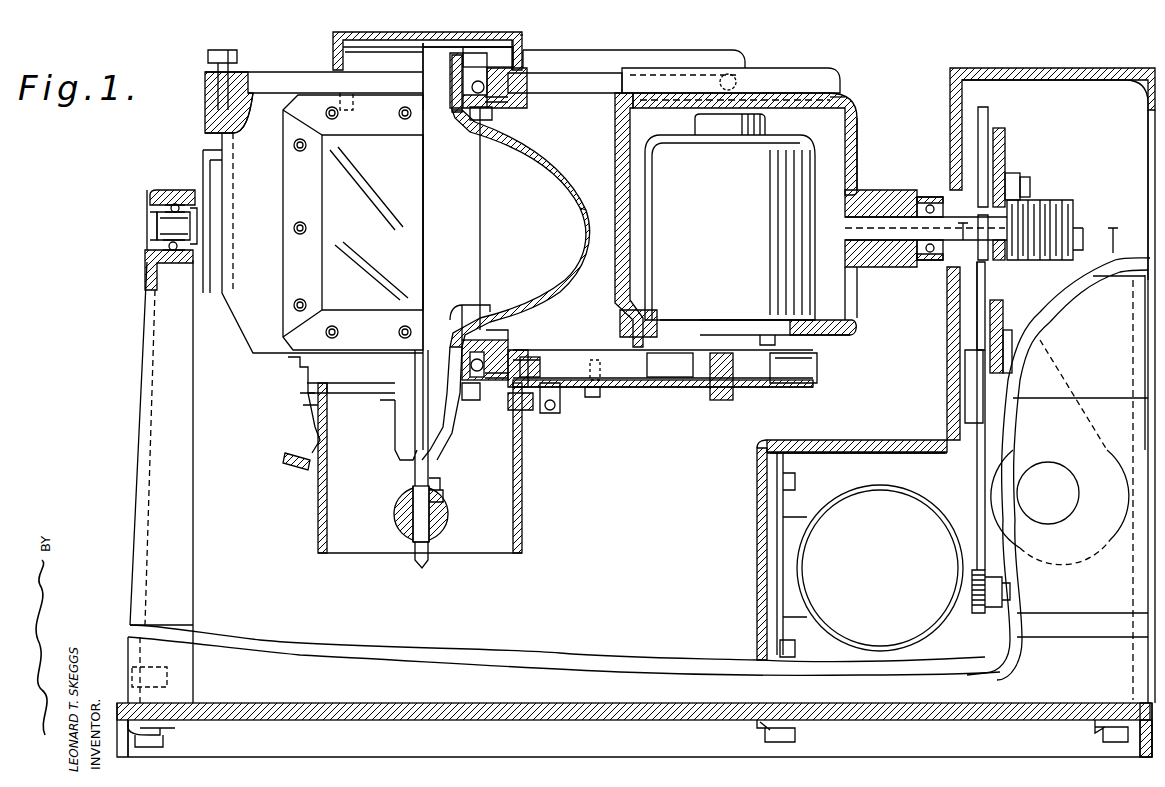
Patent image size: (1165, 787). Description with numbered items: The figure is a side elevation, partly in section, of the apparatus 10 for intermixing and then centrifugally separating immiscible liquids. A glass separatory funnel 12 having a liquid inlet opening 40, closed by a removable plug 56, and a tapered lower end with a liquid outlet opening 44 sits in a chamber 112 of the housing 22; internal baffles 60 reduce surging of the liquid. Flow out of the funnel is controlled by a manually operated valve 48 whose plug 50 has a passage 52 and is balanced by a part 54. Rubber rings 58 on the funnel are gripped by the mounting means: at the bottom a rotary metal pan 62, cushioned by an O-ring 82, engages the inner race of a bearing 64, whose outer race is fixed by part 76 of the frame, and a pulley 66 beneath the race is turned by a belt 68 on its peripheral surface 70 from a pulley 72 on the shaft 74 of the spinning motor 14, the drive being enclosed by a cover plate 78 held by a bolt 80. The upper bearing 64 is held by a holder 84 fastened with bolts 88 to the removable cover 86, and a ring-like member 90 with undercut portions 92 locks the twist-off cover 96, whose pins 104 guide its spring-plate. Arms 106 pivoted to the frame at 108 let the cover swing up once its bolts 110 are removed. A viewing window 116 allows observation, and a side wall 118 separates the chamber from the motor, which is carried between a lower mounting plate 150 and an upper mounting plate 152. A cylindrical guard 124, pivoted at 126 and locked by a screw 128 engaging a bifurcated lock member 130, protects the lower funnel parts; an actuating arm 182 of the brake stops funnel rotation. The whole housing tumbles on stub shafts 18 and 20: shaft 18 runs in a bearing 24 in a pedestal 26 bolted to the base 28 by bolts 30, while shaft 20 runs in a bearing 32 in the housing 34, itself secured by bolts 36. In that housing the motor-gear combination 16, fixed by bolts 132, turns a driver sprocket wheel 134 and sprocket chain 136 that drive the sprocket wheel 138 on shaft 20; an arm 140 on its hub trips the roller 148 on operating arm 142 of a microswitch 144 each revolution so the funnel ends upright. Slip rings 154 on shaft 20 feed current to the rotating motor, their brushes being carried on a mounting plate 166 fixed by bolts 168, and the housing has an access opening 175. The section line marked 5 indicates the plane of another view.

The apparatus 10 is at (96, 222).
The separatory funnel 12 is at (564, 143).
The motor 14 is at (738, 238).
The motor-gear combination 16 is at (913, 500).
The stub shaft 18 is at (157, 220).
The stub shaft 20 is at (880, 200).
The housing 22 is at (858, 125).
The bearing 24 is at (150, 245).
The pedestal 26 is at (133, 410).
The base 28 is at (345, 692).
The bolts 30 is at (165, 738).
The bearing 32 is at (928, 198).
The housing 34 is at (1060, 68).
The bolts 36 is at (796, 738).
The liquid inlet opening 40 is at (437, 75).
The liquid outlet opening 44 is at (430, 462).
The valve 48 is at (452, 512).
The plug 50 is at (444, 495).
The passage 52 is at (438, 483).
The balancing part 54 is at (412, 530).
The removable plug 56 is at (420, 97).
The ring 58 is at (480, 72).
The baffles 60 is at (478, 206).
The rotary metal pan 62 is at (505, 328).
The bearing 64 is at (462, 97).
The pulley 66 is at (470, 398).
The belt 68 is at (622, 388).
The peripheral surface 70 is at (530, 355).
The pulley 72 is at (818, 355).
The shaft 74 is at (724, 400).
The frame part 76 is at (505, 408).
The cover plate 78 is at (660, 378).
The bolt 80 is at (592, 397).
The O-ring 82 is at (470, 340).
The holder 84 is at (490, 114).
The removable cover 86 is at (268, 78).
The bolts 88 is at (528, 78).
The ring-like member 90 is at (520, 40).
The undercut portions 92 is at (522, 42).
The twist-off cover 96 is at (380, 33).
The pins 104 is at (515, 40).
The arms 106 is at (708, 50).
The pivot 108 is at (738, 75).
The bolts 110 is at (232, 50).
The chamber 112 is at (604, 151).
The viewing window 116 is at (386, 246).
The side wall 118 is at (630, 142).
The cylindrical guard 124 is at (522, 525).
The pivot connection 126 is at (550, 413).
The locking screw 128 is at (283, 465).
The bifurcated lock member 130 is at (312, 430).
The bolts 132 is at (790, 478).
The driver sprocket wheel 134 is at (978, 570).
The sprocket chain 136 is at (977, 473).
The driven sprocket wheel 138 is at (988, 112).
The arm 140 is at (1005, 147).
The operating arm 142 is at (1005, 308).
The microswitch 144 is at (1010, 335).
The roller 148 is at (1000, 295).
The lower mounting plate 150 is at (840, 330).
The upper mounting plate 152 is at (840, 100).
The slip rings 154 is at (1066, 200).
The mounting plate 166 is at (1015, 178).
The bolts 168 is at (1030, 185).
The access opening 175 is at (1140, 110).
The actuating arm 182 is at (540, 365).
The section line 5 is at (1038, 236).